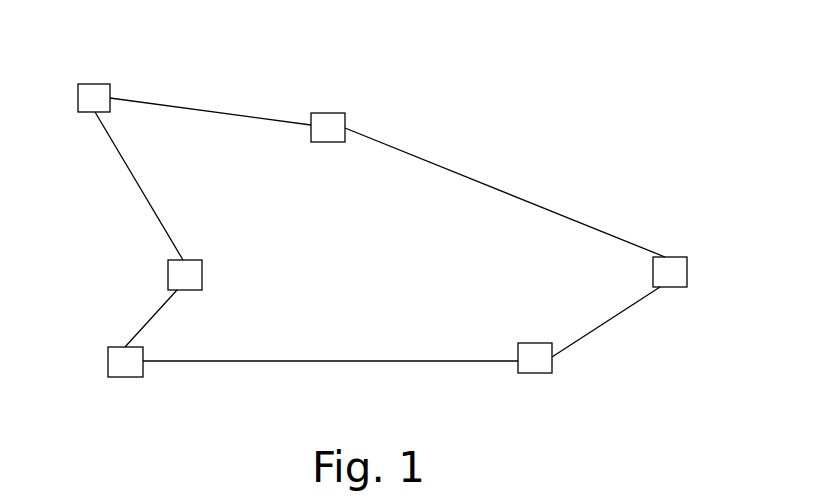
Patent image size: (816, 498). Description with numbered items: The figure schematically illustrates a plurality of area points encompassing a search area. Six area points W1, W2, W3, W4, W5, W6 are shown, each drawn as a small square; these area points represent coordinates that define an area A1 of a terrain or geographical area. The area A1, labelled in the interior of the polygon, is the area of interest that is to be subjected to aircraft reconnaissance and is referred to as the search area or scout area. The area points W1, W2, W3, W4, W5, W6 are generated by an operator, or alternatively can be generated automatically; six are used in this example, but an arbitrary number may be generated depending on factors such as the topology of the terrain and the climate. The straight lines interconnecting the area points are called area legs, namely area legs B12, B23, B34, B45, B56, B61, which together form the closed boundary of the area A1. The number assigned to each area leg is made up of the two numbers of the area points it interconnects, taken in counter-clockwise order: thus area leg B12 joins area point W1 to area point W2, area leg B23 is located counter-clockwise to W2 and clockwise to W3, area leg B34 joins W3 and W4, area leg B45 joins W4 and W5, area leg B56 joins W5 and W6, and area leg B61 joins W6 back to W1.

The area point W1 is at (687, 272).
The area point W2 is at (330, 113).
The area point W3 is at (98, 84).
The area point W4 is at (168, 275).
The area point W5 is at (130, 377).
The area point W6 is at (537, 373).
The area leg B12 is at (516, 198).
The area leg B23 is at (208, 112).
The area leg B34 is at (142, 191).
The area leg B45 is at (144, 327).
The area leg B56 is at (352, 361).
The area leg B61 is at (610, 321).
The area A1 is at (380, 229).